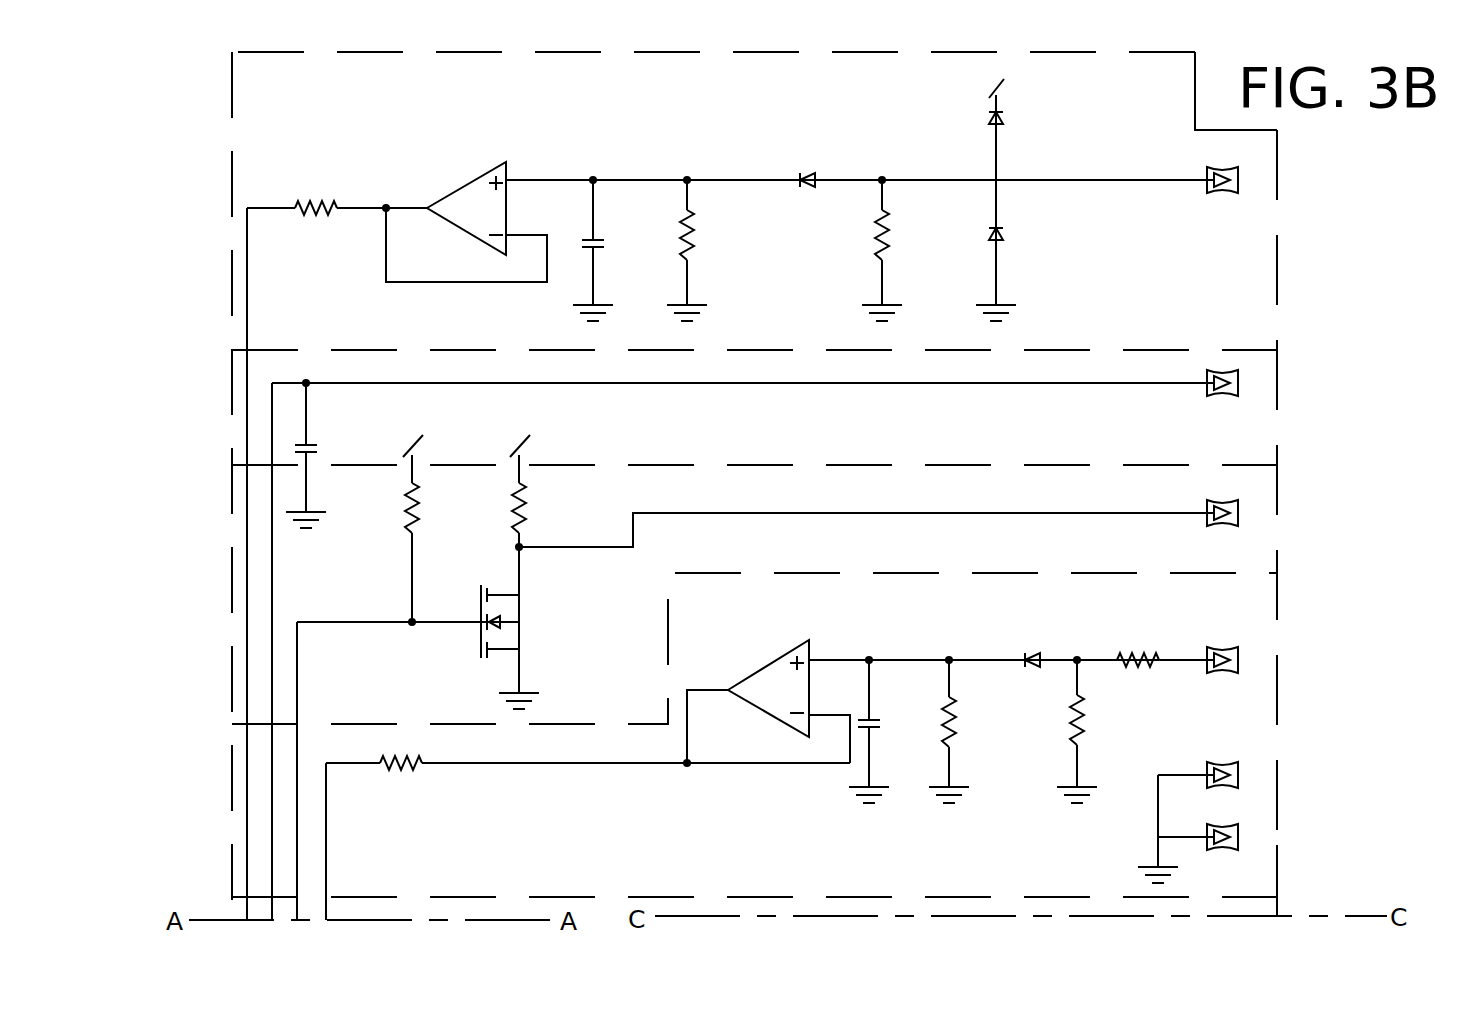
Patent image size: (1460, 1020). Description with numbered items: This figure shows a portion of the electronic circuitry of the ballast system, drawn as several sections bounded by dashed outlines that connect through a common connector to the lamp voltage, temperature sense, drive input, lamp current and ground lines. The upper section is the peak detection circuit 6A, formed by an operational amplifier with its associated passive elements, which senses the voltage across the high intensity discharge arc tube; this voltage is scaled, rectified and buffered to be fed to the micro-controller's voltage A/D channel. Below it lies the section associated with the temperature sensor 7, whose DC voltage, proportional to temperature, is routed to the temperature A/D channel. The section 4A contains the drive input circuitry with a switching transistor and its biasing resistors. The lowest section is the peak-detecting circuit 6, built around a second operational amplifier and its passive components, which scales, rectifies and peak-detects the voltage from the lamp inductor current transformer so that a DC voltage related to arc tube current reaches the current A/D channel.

The peak detection circuit 6A is at (232, 175).
The temperature sensor 7 is at (232, 393).
The drive input / switching transistor circuit section 4A is at (232, 588).
The peak-detecting circuit 6 is at (232, 785).